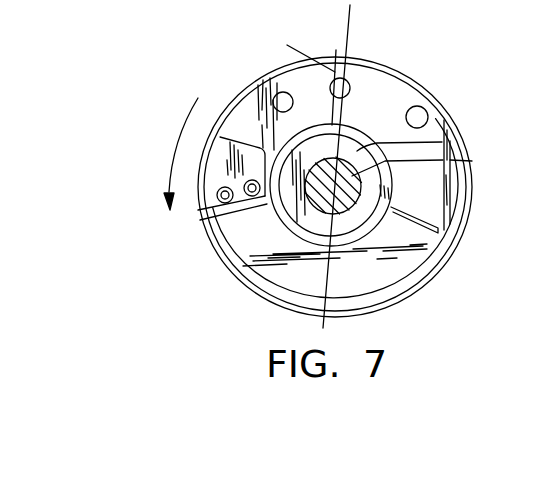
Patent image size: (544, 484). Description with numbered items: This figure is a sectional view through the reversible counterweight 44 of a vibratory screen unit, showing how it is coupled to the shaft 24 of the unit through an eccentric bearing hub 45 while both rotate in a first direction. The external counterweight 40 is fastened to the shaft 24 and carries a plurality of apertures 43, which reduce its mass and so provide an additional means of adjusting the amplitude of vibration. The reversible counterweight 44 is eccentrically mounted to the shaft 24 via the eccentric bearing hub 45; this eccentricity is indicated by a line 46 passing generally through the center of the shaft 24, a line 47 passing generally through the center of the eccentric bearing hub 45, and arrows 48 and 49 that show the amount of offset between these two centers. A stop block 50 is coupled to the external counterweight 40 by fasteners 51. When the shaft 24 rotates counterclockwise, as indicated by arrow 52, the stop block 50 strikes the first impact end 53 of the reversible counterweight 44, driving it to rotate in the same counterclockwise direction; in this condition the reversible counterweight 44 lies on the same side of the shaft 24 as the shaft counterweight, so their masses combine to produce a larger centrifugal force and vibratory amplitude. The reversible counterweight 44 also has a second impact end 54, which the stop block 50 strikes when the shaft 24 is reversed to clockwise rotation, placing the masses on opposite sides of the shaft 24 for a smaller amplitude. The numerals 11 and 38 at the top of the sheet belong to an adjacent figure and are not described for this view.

The vehicle 11 is at (171, 8).
The frame member 38 is at (101, 11).
The shaft 24 is at (472, 161).
The external counterweight 40 is at (452, 118).
The apertures 43 is at (277, 94).
The reversible counterweight 44 is at (383, 263).
The eccentric bearing hub 45 is at (450, 142).
The line 46 is at (347, 33).
The line 47 is at (295, 46).
The arrow 48 is at (352, 49).
The arrow 49 is at (332, 48).
The stop block 50 is at (230, 140).
The fasteners 51 is at (217, 203).
The arrow 52 is at (167, 188).
The first impact end 53 is at (210, 221).
The second impact end 54 is at (430, 222).